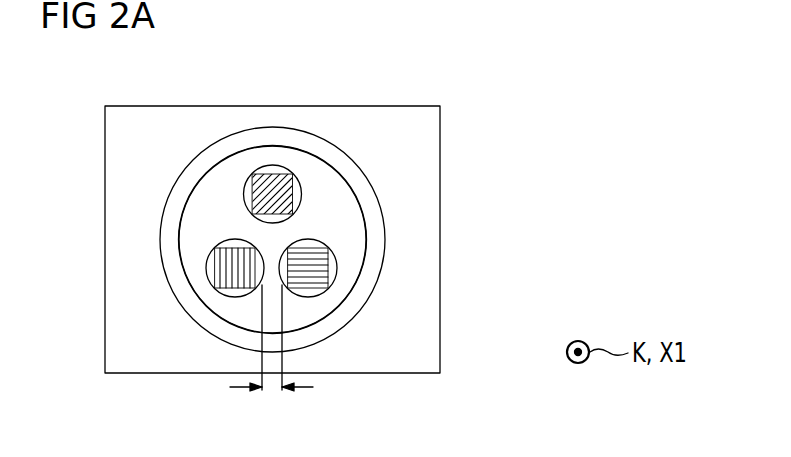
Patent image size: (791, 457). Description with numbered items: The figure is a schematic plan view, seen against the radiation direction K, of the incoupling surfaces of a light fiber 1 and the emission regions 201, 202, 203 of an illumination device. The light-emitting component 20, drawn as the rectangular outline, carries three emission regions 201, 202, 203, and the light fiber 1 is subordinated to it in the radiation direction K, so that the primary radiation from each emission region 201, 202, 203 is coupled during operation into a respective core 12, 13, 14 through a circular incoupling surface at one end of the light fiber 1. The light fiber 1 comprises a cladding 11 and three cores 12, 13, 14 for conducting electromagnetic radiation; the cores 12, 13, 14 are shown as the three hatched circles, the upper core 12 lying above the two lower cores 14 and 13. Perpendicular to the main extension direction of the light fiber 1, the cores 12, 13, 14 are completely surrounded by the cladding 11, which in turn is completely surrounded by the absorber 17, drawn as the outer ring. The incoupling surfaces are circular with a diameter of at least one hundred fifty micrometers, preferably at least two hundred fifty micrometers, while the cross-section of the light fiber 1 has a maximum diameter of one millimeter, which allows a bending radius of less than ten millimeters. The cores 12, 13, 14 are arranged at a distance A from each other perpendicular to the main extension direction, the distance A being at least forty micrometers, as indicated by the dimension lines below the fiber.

The light fiber 1 is at (330, 338).
The cladding 11 is at (338, 190).
The core 12 is at (298, 169).
The core 13 is at (335, 272).
The core 14 is at (205, 270).
The absorber 17 is at (248, 141).
The light-emitting component 20 is at (160, 118).
The emission region 201 is at (210, 250).
The emission region 202 is at (278, 165).
The emission region 203 is at (333, 248).
The distance A is at (272, 388).